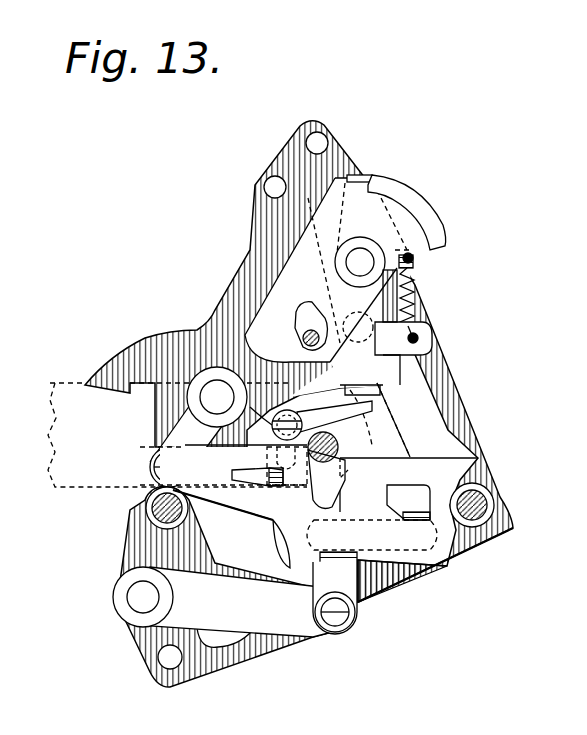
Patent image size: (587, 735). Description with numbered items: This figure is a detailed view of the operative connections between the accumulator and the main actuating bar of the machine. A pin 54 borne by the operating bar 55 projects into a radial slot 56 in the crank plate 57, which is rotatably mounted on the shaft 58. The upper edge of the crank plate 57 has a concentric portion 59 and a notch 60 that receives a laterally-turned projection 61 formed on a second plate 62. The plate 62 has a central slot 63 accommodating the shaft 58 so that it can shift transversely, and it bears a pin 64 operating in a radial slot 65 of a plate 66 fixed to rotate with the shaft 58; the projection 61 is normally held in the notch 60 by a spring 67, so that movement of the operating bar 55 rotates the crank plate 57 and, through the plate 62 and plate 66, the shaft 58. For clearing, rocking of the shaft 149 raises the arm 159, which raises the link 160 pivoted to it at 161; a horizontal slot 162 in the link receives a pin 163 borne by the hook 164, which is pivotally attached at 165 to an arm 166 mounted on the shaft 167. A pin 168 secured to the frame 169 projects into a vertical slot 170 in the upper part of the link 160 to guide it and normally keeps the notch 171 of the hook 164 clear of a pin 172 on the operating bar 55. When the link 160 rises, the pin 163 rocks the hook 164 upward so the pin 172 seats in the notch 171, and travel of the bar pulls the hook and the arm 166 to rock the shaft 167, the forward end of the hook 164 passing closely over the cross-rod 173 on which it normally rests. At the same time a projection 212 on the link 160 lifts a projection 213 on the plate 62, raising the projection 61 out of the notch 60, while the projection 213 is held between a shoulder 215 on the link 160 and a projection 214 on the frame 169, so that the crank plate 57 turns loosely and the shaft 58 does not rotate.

The operating bar 55 is at (60, 383).
The pin 54 is at (308, 338).
The radial slot 56 is at (297, 345).
The crank plate 57 is at (391, 216).
The shaft 58 is at (353, 257).
The concentric portion 59 is at (410, 187).
The notch 60 is at (362, 188).
The laterally-turned projection 61 is at (358, 175).
The second plate 62 is at (393, 363).
The central slot 63 is at (304, 256).
The pin 64 is at (367, 328).
The radial slot 65 is at (350, 307).
The plate 66 is at (424, 352).
The spring 67 is at (413, 313).
The shaft 149 is at (137, 597).
The arm 159 is at (247, 602).
The link 160 is at (342, 575).
The pivot 161 is at (333, 617).
The horizontal slot 162 is at (413, 530).
The pin 163 is at (327, 537).
The hook 164 is at (426, 435).
The pivot 165 is at (163, 477).
The arm 166 is at (187, 437).
The shaft 167 is at (217, 397).
The pin 168 is at (275, 441).
The frame 169 is at (233, 283).
The vertical slot 170 is at (302, 420).
The notch 171 is at (313, 500).
The pin 172 is at (335, 468).
The cross-rod 173 is at (487, 510).
The projection 212 is at (362, 470).
The projection 213 is at (398, 442).
The projection 214 is at (382, 388).
The shoulder 215 is at (340, 372).